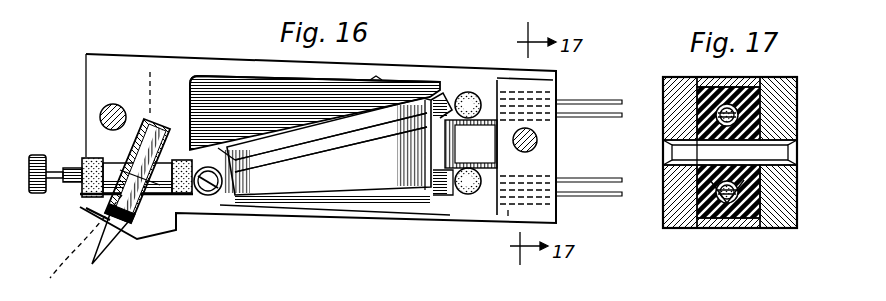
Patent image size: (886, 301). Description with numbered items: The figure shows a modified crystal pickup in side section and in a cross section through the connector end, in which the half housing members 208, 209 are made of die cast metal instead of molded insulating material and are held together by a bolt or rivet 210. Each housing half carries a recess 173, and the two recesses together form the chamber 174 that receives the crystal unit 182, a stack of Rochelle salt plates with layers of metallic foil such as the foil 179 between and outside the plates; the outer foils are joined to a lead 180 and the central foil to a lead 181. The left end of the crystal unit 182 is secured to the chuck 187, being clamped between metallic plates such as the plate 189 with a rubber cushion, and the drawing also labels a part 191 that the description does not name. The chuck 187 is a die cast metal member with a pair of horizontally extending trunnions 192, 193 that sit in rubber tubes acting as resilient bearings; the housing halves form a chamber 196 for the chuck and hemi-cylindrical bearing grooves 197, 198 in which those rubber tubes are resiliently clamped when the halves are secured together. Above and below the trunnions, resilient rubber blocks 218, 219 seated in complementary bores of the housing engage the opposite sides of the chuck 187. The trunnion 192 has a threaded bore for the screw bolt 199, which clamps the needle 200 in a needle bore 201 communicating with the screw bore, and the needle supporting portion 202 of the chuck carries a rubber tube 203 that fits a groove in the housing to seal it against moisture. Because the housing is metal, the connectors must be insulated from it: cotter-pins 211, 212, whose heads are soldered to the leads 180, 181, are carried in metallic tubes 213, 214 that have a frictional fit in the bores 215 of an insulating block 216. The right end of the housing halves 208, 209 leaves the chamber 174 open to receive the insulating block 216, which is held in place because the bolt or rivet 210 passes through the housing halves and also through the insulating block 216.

In FIG. 16, the recess 173 is at (376, 78).
In FIG. 16, the chamber 174 is at (216, 80).
In FIG. 16, the layer of metallic foil 179 is at (413, 198).
In FIG. 16, the lead 180 is at (447, 95).
In FIG. 16, the lead 181 is at (460, 196).
In FIG. 16, the crystal unit 182 is at (370, 200).
In FIG. 16, the chuck 187 is at (126, 112).
In FIG. 16, the metallic plate 189 is at (262, 178).
In FIG. 16, the slot wall 191 is at (270, 160).
In FIG. 16, the trunnion 192 is at (102, 165).
In FIG. 16, the trunnion 193 is at (208, 196).
In FIG. 16, the chamber 196 is at (218, 150).
In FIG. 16, the hemi-cylindrical bearing groove 197 is at (86, 158).
In FIG. 16, the hemi-cylindrical bearing groove 198 is at (170, 196).
In FIG. 16, the screw bolt 199 is at (54, 186).
In FIG. 16, the needle 200 is at (96, 262).
In FIG. 16, the needle bore 201 is at (120, 230).
In FIG. 16, the needle supporting portion 202 is at (150, 210).
In FIG. 16, the rubber tube 203 is at (96, 213).
In FIG. 16, the half housing member 208 is at (116, 48).
In FIG. 17, the half housing member 208 is at (665, 78).
In FIG. 17, the half housing member 209 is at (740, 118).
In FIG. 16, the bolt or rivet 210 is at (540, 136).
In FIG. 17, the bolt or rivet 210 is at (782, 188).
In FIG. 16, the cotter-pin 211 is at (598, 96).
In FIG. 17, the cotter-pin 211 is at (745, 128).
In FIG. 16, the cotter-pin 212 is at (590, 178).
In FIG. 17, the cotter-pin 212 is at (744, 230).
In FIG. 16, the metallic tube 213 is at (496, 82).
In FIG. 17, the metallic tube 213 is at (790, 142).
In FIG. 16, the metallic tube 214 is at (494, 166).
In FIG. 17, the metallic tube 214 is at (718, 232).
In FIG. 16, the bore 215 is at (558, 80).
In FIG. 17, the bore 215 is at (668, 102).
In FIG. 16, the insulating block 216 is at (512, 210).
In FIG. 17, the insulating block 216 is at (790, 78).
In FIG. 16, the resilient rubber block 218 is at (143, 86).
In FIG. 16, the resilient rubber block 219 is at (76, 247).